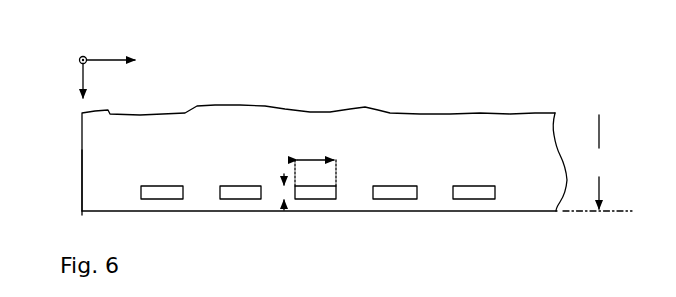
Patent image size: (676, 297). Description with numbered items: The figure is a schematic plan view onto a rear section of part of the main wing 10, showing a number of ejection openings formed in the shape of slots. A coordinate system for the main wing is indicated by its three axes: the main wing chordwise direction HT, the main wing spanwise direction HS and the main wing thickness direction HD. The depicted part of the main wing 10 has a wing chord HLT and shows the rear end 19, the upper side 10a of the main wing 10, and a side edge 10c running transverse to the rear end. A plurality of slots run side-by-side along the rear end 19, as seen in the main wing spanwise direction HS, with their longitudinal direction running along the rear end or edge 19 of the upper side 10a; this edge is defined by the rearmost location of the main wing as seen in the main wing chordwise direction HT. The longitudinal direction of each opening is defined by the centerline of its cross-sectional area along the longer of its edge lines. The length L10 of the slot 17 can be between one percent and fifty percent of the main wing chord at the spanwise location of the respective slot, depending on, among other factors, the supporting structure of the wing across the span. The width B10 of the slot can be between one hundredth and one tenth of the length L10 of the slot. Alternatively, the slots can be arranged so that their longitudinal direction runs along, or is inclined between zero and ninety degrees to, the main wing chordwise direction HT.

The main wing 10 is at (260, 228).
The upper side of the main wing 10a is at (527, 200).
The side edge 10c is at (80, 160).
The slot 17 is at (155, 187).
The rear end 19 is at (308, 211).
The length of the slot L10 is at (315, 163).
The width of the slot B10 is at (284, 188).
The wing chord HLT is at (597, 163).
The main wing spanwise direction HS is at (108, 59).
The main wing thickness direction HD is at (78, 57).
The main wing chordwise direction HT is at (81, 78).